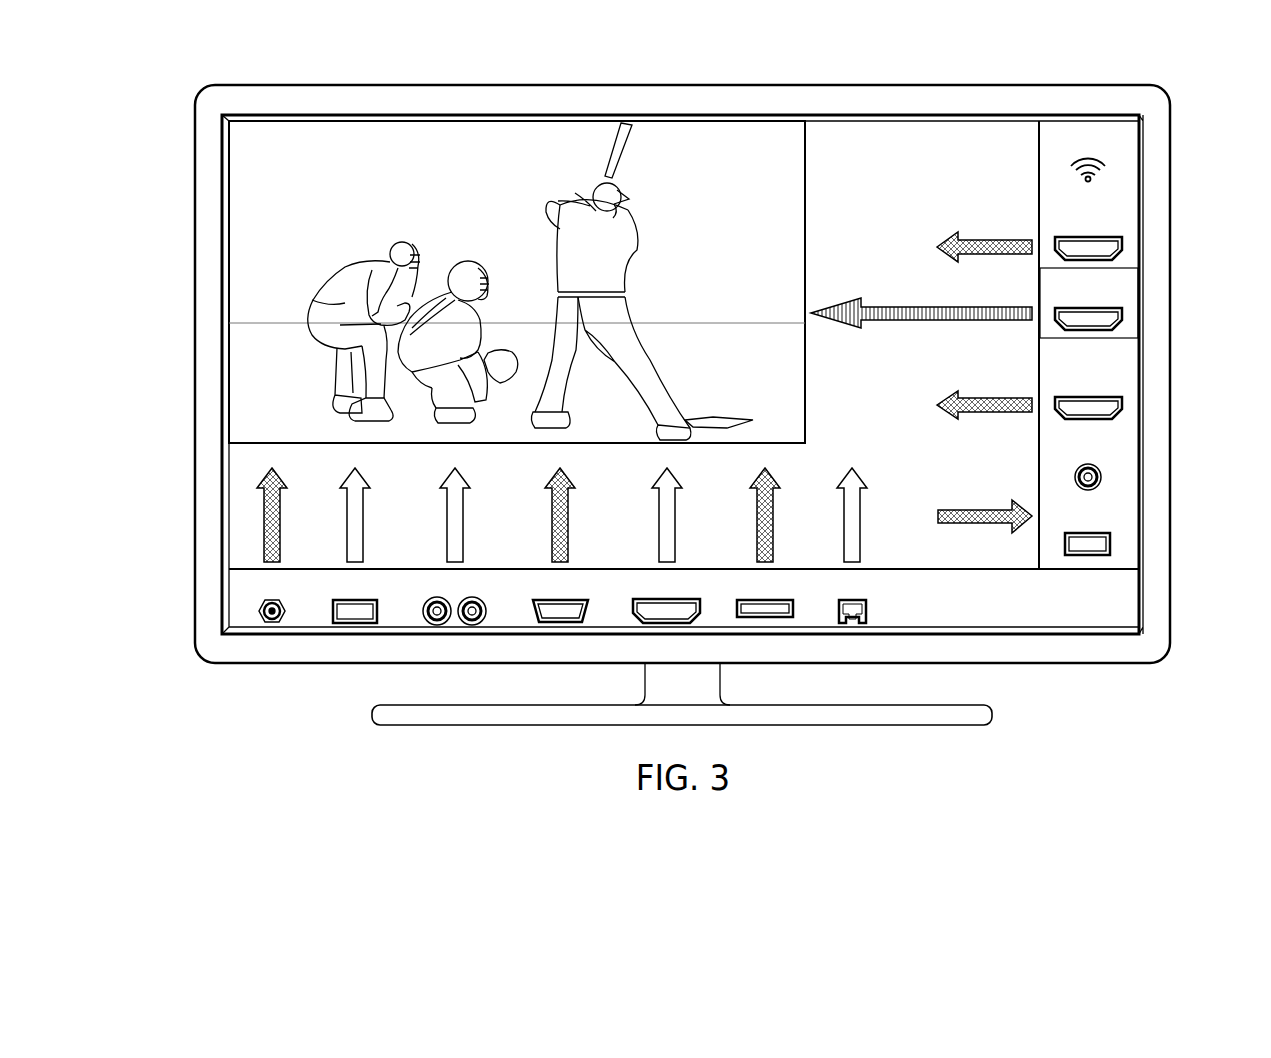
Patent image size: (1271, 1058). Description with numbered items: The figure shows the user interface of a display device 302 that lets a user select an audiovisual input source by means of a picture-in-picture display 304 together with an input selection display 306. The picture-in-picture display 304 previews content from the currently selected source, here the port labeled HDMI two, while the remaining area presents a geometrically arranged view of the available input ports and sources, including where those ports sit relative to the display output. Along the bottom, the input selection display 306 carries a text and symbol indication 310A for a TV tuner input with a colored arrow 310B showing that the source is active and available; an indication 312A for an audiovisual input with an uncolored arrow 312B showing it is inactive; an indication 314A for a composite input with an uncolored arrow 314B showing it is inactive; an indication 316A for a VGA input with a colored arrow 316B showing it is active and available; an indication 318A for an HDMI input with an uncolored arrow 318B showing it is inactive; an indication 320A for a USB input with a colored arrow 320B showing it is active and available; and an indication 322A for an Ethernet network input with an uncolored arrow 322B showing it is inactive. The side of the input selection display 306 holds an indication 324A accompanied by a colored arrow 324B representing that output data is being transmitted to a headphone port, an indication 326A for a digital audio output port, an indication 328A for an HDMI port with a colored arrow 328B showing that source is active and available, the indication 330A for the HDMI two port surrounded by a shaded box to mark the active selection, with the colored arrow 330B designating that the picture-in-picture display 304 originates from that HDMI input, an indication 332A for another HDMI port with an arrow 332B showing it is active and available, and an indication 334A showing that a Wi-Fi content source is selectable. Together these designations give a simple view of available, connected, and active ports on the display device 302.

The display device 302 is at (680, 86).
The picture-in-picture display 304 is at (248, 253).
The input selection display 306 is at (938, 150).
The text and symbol indication 310A is at (272, 625).
The colored arrow 310B is at (281, 537).
The text and symbol indication 312A is at (355, 625).
The uncolored arrow 312B is at (364, 537).
The text and symbol indication 314A is at (455, 625).
The uncolored arrow 314B is at (464, 537).
The text and symbol indication 316A is at (560, 625).
The colored arrow 316B is at (569, 537).
The text and symbol indication 318A is at (668, 625).
The uncolored arrow 318B is at (676, 537).
The text and symbol indication 320A is at (765, 620).
The colored arrow 320B is at (774, 537).
The text and symbol indication 322A is at (852, 625).
The uncolored arrow 322B is at (861, 537).
The text and symbol indication 324A is at (1110, 543).
The colored arrow 324B is at (977, 510).
The text and symbol indication 326A is at (1101, 476).
The text and symbol indication 328A is at (1122, 404).
The colored arrow 328B is at (997, 398).
The text and symbol indication 330A is at (1122, 316).
The colored arrow 330B is at (915, 307).
The text and symbol indication 332A is at (1122, 246).
The arrow 332B is at (997, 240).
The text and symbol indication 334A is at (1110, 167).